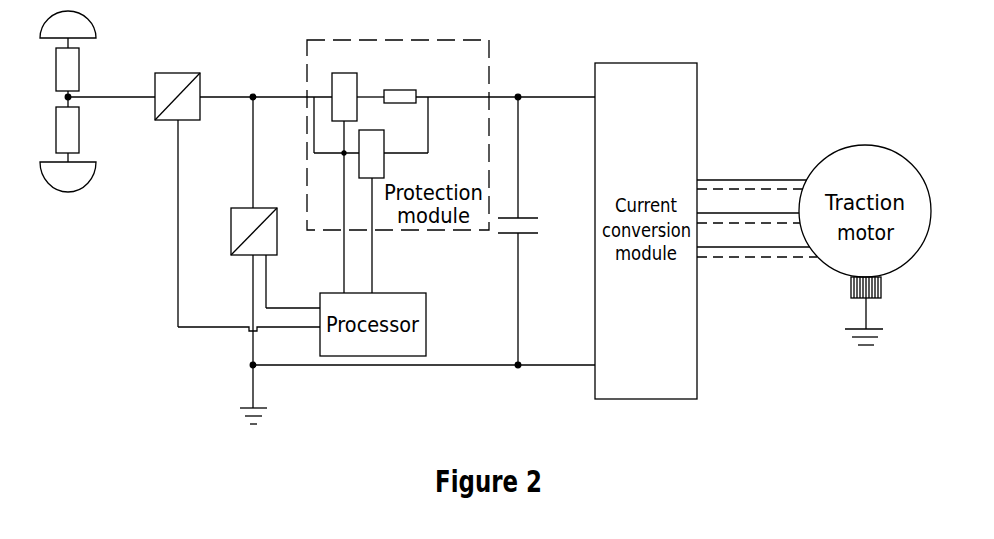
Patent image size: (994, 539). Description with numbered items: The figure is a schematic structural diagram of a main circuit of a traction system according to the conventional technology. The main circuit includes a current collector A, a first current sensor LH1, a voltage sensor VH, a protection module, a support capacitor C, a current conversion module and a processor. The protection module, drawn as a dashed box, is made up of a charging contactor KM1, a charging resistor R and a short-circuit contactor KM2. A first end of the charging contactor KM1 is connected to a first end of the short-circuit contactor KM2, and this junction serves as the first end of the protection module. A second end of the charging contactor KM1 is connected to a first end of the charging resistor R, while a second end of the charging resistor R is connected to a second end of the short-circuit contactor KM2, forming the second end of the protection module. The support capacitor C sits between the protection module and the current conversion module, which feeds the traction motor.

The current collector A is at (68, 101).
The first current sensor LH1 is at (177, 85).
The charging contactor KM1 is at (344, 83).
The short-circuit contactor KM2 is at (398, 156).
The charging resistor R is at (400, 85).
The support capacitor C is at (520, 231).
The voltage sensor VH is at (235, 232).